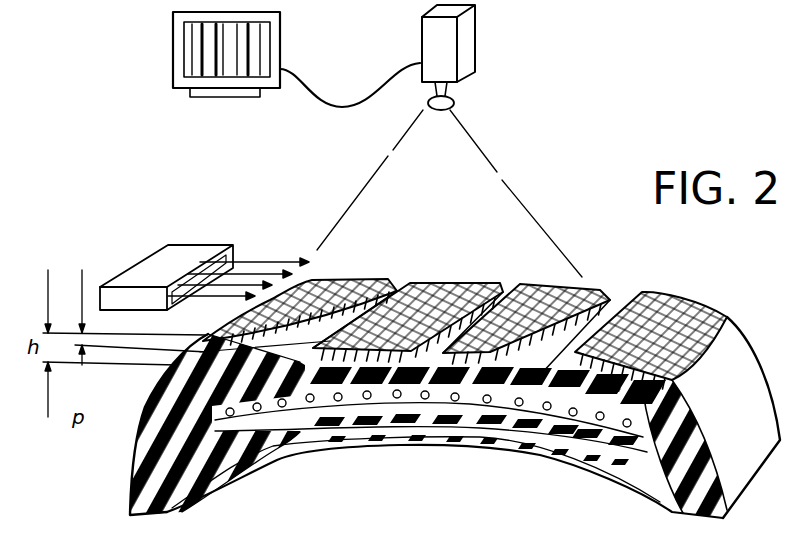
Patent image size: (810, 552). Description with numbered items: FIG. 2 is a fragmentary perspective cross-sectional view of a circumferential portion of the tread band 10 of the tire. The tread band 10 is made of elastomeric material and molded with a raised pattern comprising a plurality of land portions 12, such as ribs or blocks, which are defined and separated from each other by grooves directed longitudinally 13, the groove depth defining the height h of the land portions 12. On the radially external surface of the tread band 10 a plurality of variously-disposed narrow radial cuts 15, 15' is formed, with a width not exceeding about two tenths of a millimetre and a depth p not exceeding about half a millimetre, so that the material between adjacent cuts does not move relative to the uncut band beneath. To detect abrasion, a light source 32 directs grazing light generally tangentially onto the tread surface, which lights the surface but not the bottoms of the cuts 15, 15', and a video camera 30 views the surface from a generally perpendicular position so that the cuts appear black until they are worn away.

The tread band 10 is at (508, 388).
The land portions 12 is at (383, 372).
The longitudinal grooves 13 is at (517, 290).
The narrow radial cuts 15 is at (405, 297).
The narrow radial cuts 15' is at (494, 309).
The video camera 30 is at (462, 33).
The light source 32 is at (175, 256).